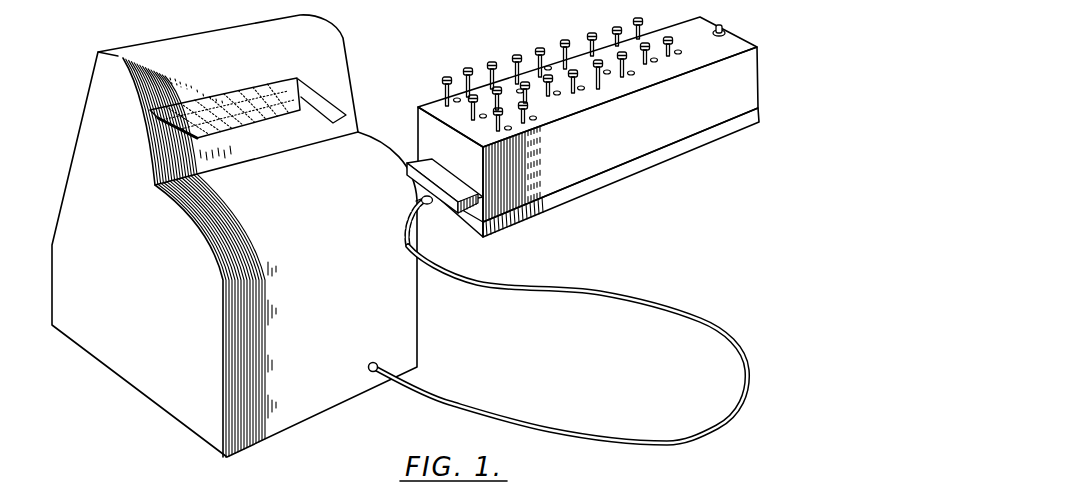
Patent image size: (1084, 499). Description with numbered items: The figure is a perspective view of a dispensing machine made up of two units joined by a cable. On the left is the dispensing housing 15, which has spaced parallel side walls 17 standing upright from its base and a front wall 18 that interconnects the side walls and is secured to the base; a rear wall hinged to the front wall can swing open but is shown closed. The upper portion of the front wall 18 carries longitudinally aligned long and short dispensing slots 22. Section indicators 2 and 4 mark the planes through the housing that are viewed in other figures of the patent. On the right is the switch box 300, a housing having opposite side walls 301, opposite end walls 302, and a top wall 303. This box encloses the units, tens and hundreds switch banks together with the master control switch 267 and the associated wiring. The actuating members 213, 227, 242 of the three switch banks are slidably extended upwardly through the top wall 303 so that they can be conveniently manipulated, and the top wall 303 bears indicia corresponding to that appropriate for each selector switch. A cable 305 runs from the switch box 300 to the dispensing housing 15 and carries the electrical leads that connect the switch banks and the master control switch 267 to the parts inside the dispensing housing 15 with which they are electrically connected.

The section line 2- 2 is at (230, 101).
The section line 4- 4 is at (320, 493).
The dispensing housing 15 is at (100, 363).
The side walls 17 is at (100, 305).
The front wall 18 is at (335, 325).
The dispensing slots 22 is at (258, 89).
The actuating members 213 is at (516, 54).
The actuating members 227 is at (598, 89).
The actuating members 242 is at (527, 122).
The master control switch 267 is at (725, 25).
The switch box 300 is at (583, 127).
The side walls 301 is at (648, 137).
The end walls 302 is at (464, 159).
The top wall 303 is at (655, 76).
The cable 305 is at (636, 302).